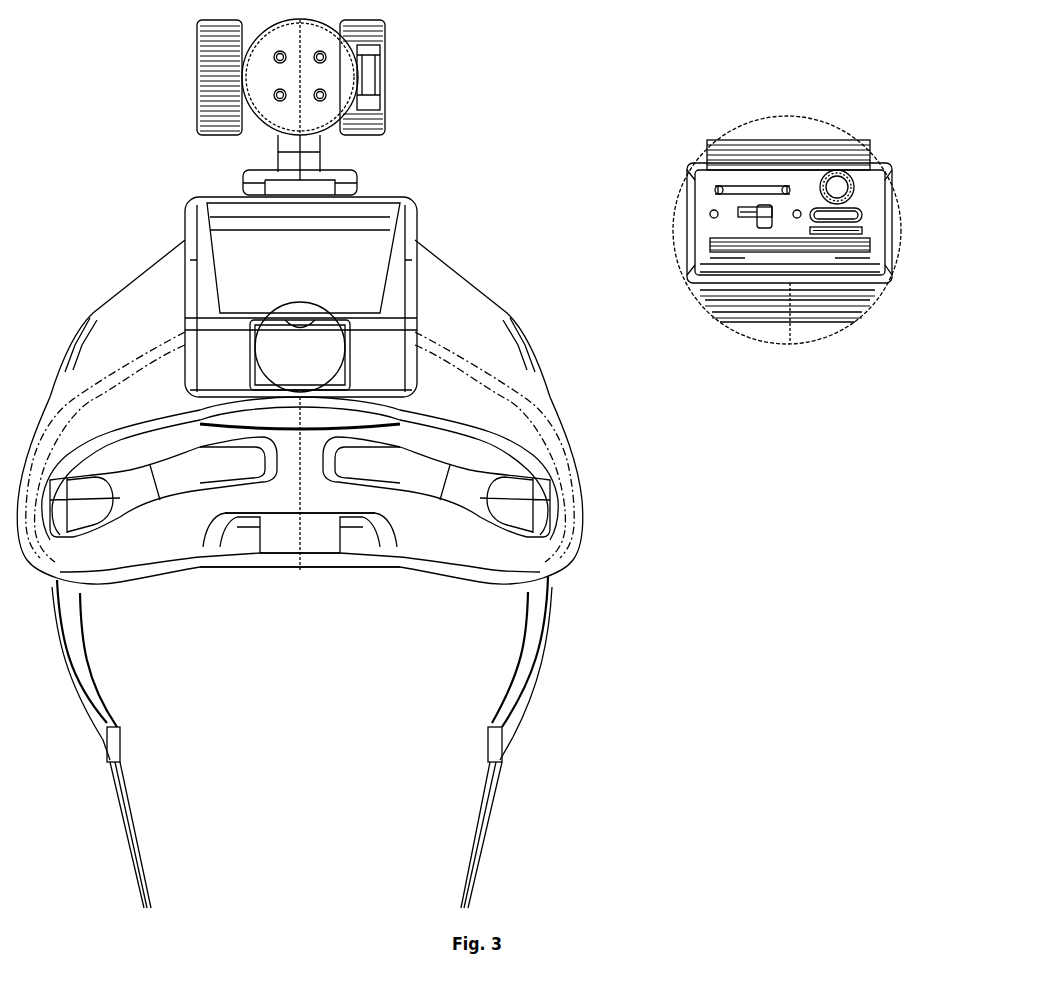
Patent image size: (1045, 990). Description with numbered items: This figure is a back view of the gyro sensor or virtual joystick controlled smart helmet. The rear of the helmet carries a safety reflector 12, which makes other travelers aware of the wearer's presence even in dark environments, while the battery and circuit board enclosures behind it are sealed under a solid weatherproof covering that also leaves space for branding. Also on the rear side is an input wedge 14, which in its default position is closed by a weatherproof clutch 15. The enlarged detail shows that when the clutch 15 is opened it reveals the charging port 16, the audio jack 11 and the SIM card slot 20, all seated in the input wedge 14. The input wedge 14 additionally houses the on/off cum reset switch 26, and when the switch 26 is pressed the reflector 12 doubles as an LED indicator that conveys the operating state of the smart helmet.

The audio jack 11 is at (857, 183).
The safety reflector 12 is at (352, 420).
The input wedge 14 is at (737, 158).
The weatherproof clutch 15 is at (345, 327).
The charging port 16 is at (860, 214).
The SIM card slot 20 is at (847, 234).
The on/off cum reset switch 26 is at (767, 205).